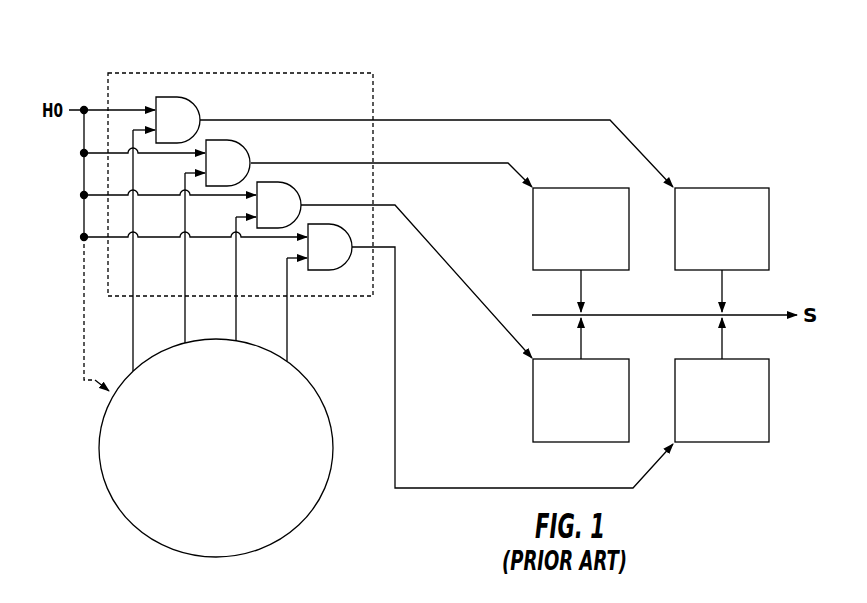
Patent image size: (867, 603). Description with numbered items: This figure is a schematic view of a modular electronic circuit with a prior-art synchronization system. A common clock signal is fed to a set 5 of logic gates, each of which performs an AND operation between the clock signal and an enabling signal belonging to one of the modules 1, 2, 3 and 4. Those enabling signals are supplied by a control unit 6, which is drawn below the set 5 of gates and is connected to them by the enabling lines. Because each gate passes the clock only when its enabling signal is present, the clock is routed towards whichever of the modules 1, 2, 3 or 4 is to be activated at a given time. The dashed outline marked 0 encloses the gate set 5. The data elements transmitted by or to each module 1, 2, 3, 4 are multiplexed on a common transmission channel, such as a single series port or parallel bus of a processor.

The dashed block boundary 0 is at (213, 64).
The module 1 is at (722, 229).
The module 2 is at (581, 229).
The module 3 is at (581, 400).
The module 4 is at (722, 400).
The set of logic gates 5 is at (378, 285).
The control unit 6 is at (216, 448).